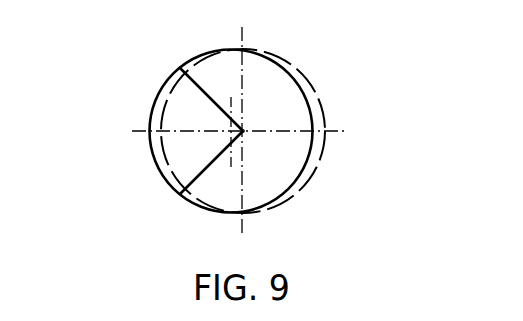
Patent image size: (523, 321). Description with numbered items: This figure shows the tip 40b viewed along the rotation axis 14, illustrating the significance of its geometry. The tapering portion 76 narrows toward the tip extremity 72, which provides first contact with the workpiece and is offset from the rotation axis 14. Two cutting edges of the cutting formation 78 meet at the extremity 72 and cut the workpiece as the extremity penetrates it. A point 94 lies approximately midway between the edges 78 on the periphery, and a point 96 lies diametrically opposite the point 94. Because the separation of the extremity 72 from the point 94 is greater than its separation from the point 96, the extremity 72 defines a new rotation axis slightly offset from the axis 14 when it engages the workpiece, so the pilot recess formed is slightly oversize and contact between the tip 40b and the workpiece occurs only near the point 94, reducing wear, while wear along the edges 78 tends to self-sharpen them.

The rotation axis 14 is at (233, 131).
The tip 40b is at (118, 166).
The tip extremity 72 is at (243, 133).
The tapering portion 76 is at (273, 100).
The cutting formation 78 is at (198, 87).
The point approximately midway between the edges 94 is at (150, 130).
The point diametrically opposite the point 94 96 is at (313, 132).